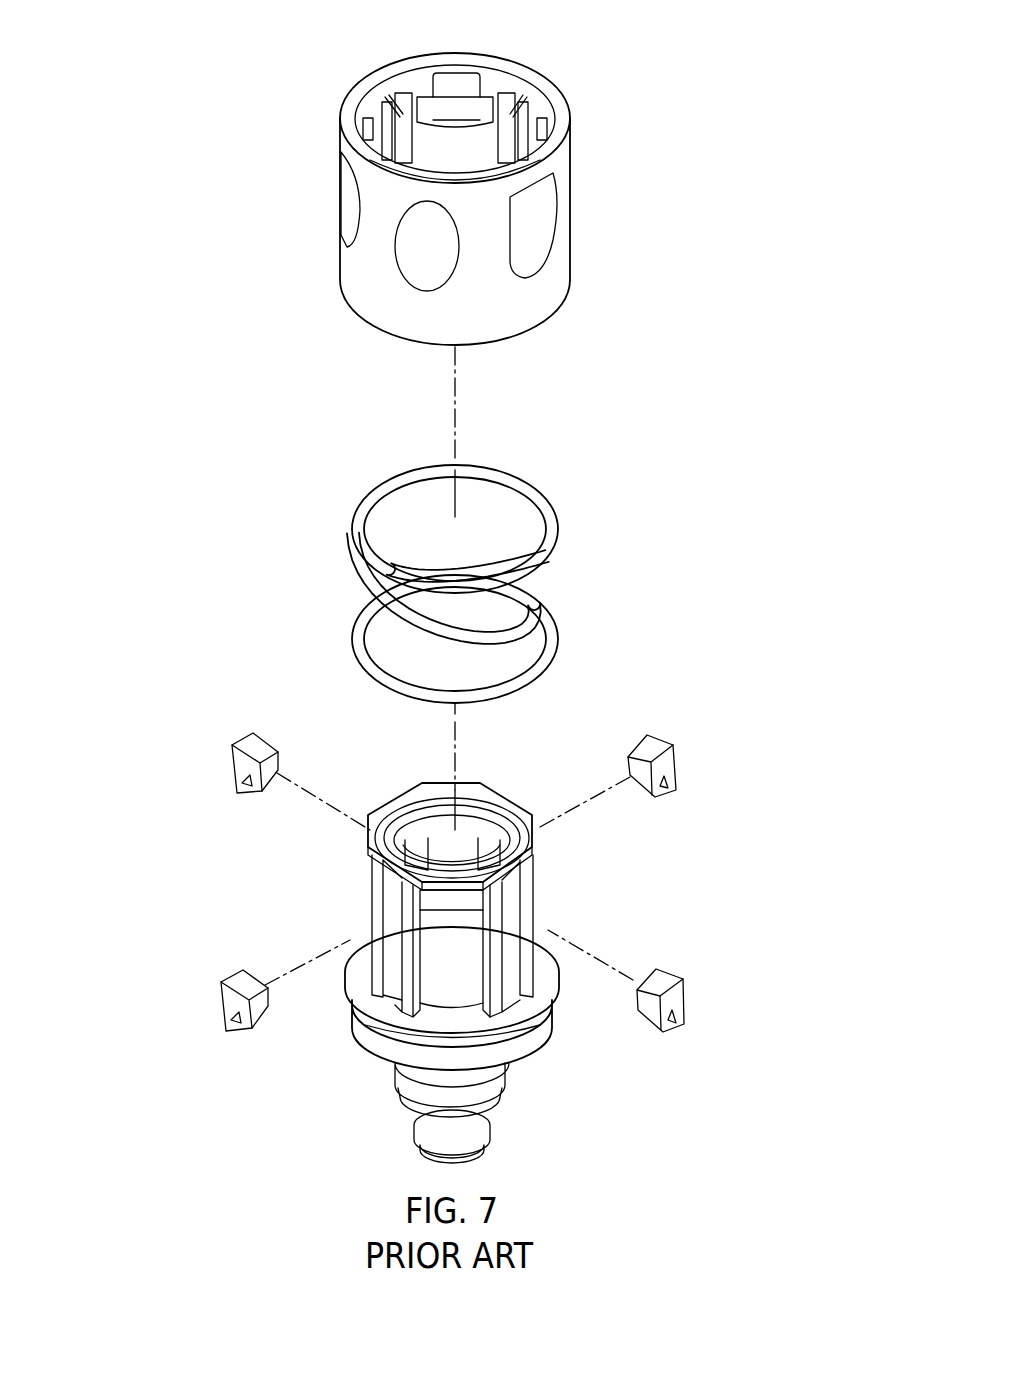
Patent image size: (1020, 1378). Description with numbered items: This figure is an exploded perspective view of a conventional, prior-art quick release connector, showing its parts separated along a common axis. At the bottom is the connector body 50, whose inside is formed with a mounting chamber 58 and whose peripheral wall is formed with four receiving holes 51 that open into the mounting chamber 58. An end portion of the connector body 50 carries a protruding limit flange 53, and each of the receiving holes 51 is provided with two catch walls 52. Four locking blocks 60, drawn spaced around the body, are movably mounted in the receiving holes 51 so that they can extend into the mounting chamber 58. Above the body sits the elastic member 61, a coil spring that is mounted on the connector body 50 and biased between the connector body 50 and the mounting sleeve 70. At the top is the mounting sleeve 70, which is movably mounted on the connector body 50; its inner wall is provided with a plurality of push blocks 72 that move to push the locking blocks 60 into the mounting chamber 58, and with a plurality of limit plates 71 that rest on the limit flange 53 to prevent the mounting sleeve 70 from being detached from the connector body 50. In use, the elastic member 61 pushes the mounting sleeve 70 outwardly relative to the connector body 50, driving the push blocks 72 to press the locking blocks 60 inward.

The connector body 50 is at (460, 957).
The receiving holes 51 is at (512, 903).
The catch walls 52 is at (515, 978).
The limit flange 53 is at (372, 836).
The mounting chamber 58 is at (465, 853).
The locking blocks 60 is at (690, 755).
The elastic member 61 is at (343, 577).
The mounting sleeve 70 is at (406, 188).
The limit plates 71 is at (463, 95).
The push blocks 72 is at (523, 143).